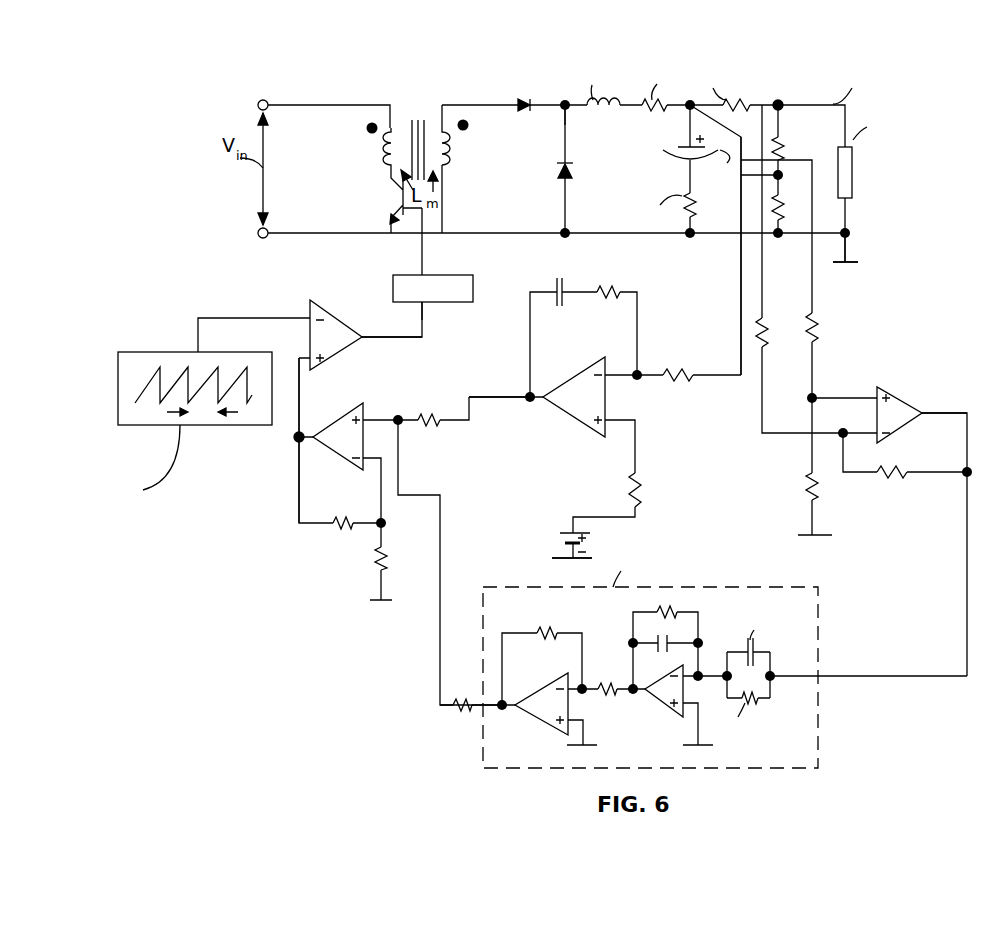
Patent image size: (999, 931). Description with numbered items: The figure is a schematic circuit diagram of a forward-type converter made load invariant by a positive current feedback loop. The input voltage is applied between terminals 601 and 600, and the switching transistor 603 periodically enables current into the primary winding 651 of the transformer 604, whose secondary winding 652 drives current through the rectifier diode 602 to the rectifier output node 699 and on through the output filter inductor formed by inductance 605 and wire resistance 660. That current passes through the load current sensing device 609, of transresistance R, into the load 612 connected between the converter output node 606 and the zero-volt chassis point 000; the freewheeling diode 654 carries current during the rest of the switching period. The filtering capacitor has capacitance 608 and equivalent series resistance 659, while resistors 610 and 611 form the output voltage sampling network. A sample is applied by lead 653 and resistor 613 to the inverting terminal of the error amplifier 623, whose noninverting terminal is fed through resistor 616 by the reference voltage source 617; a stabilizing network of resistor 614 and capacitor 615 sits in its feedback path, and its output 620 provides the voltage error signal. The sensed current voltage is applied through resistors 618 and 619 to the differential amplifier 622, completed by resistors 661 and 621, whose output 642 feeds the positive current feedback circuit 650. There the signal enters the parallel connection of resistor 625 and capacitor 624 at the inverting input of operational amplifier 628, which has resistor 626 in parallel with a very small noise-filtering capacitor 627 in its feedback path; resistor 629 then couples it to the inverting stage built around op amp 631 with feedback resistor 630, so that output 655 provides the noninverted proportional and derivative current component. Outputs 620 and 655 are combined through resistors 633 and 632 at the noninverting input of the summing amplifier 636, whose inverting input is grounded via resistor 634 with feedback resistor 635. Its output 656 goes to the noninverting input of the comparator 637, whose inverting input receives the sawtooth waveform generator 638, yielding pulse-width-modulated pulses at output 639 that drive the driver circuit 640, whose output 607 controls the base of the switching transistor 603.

The input terminal 600 is at (307, 236).
The input terminal 601 is at (280, 84).
The rectifier diode 602 is at (522, 98).
The switching transistor 603 is at (400, 228).
The transformer 604 is at (432, 103).
The inductance 605 is at (600, 108).
The converter output node 606 is at (783, 103).
The output of the driver circuit 607 is at (426, 272).
The capacitance 608 is at (665, 150).
The load current sensing device 609 is at (738, 101).
The resistor 610 is at (788, 138).
The resistor 611 is at (783, 213).
The load 612 is at (853, 193).
The resistor 613 is at (680, 381).
The resistor 614 is at (627, 268).
The capacitor 615 is at (562, 272).
The resistor 616 is at (635, 483).
The reference voltage source 617 is at (560, 542).
The resistor 618 is at (768, 337).
The resistor 619 is at (818, 330).
The output of the error amplifier 620 is at (480, 395).
The resistor 621 is at (900, 472).
The differential amplifier 622 is at (917, 405).
The error amplifier 623 is at (563, 408).
The capacitor 624 is at (757, 650).
The resistor 625 is at (753, 702).
The resistor 626 is at (660, 608).
The capacitor 627 is at (672, 637).
The operational amplifier 628 is at (675, 715).
The resistor 629 is at (605, 697).
The resistor 630 is at (540, 630).
The op amp 631 is at (557, 727).
The resistor 632 is at (458, 717).
The resistor 633 is at (435, 427).
The resistor 634 is at (390, 552).
The feedback resistor 635 is at (340, 518).
The summing amplifier 636 is at (330, 452).
The comparator 637 is at (342, 348).
The sawtooth waveform generator 638 is at (147, 353).
The output of the comparator 639 is at (382, 338).
The driver circuit 640 is at (462, 303).
The output of the differential amplifier 642 is at (937, 412).
The positive current feedback circuit 650 is at (818, 648).
The primary winding 651 is at (380, 157).
The secondary winding 652 is at (449, 150).
The lead 653 is at (740, 272).
The freewheeling diode 654 is at (572, 168).
The output of the op amp 655 is at (477, 717).
The output of the summing amplifier 656 is at (297, 412).
The equivalent series resistance 659 is at (707, 206).
The wire resistance 660 is at (653, 99).
The resistor 661 is at (813, 483).
The rectifier output node 699 is at (562, 110).
The zero-volt (chassis) point 000 is at (852, 237).